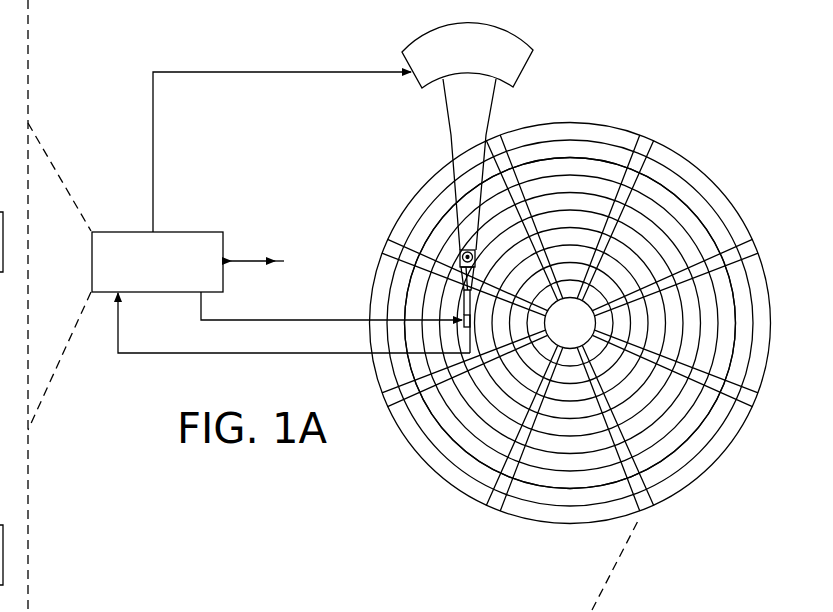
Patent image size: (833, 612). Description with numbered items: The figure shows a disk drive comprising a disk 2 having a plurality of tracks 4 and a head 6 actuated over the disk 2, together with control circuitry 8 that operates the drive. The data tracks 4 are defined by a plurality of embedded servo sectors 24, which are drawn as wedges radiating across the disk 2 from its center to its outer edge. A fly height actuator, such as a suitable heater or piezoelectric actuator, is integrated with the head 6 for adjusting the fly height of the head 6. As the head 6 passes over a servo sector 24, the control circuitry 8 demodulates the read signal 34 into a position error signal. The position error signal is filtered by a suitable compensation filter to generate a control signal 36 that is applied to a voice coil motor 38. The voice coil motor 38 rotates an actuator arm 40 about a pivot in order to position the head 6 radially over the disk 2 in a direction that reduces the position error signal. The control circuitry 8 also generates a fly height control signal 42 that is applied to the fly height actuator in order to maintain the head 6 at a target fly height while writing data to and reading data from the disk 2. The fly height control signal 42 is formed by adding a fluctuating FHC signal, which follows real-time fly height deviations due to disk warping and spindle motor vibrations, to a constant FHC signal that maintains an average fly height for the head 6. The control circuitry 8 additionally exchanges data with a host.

The disk 2 is at (707, 171).
The tracks 4 is at (572, 152).
The head 6 is at (459, 332).
The control circuitry 8 is at (193, 231).
The servo sectors 24 is at (576, 327).
The read signal 34 is at (277, 355).
The control signal 36 is at (152, 138).
The voice coil motor 38 is at (420, 82).
The actuator arm 40 is at (452, 151).
The fly height control signal 42 is at (311, 319).